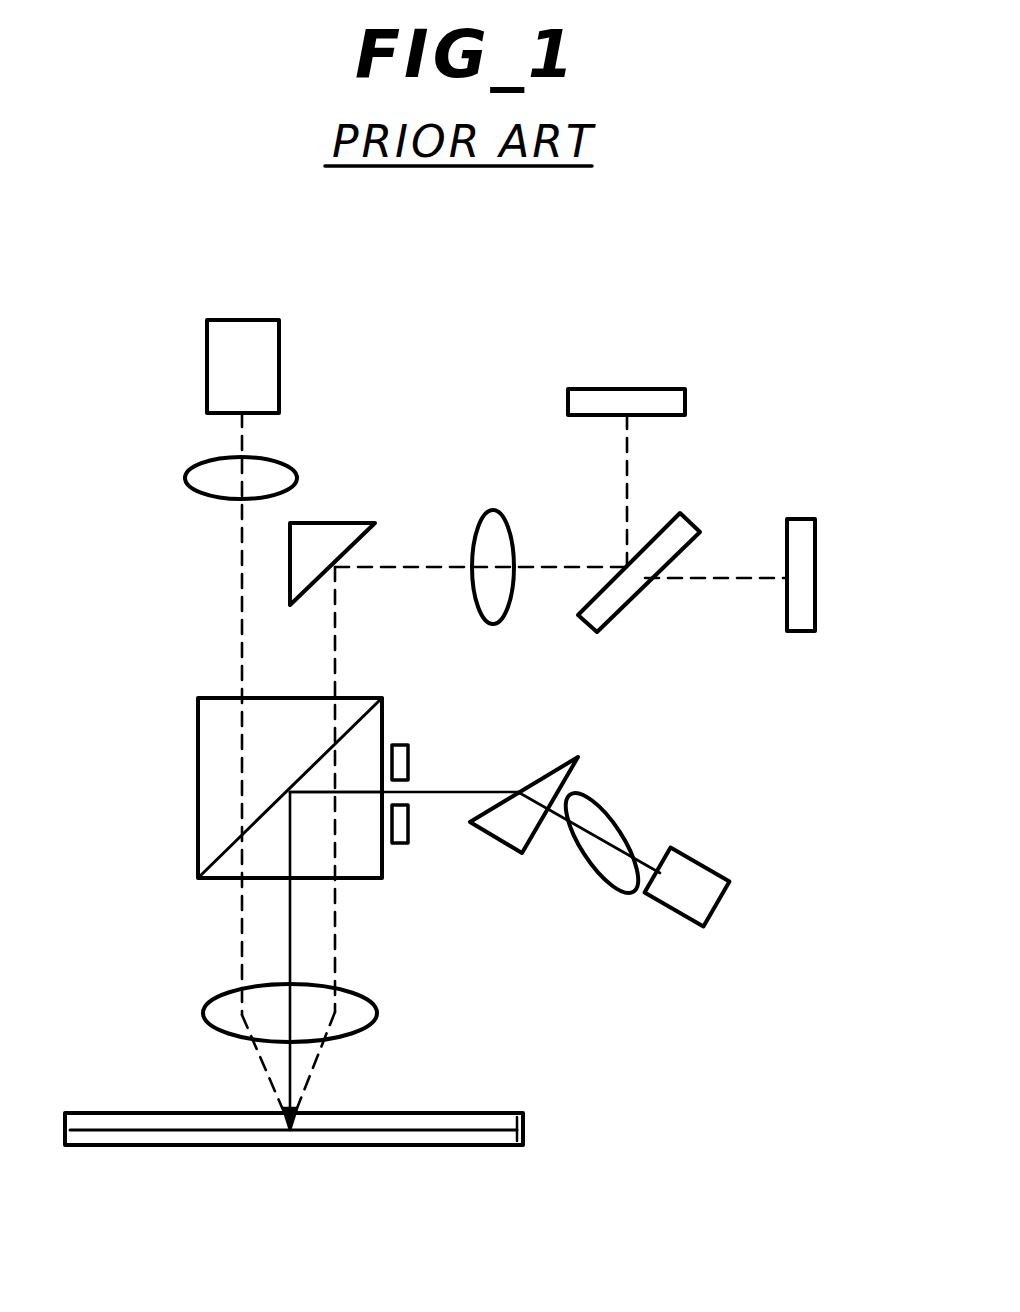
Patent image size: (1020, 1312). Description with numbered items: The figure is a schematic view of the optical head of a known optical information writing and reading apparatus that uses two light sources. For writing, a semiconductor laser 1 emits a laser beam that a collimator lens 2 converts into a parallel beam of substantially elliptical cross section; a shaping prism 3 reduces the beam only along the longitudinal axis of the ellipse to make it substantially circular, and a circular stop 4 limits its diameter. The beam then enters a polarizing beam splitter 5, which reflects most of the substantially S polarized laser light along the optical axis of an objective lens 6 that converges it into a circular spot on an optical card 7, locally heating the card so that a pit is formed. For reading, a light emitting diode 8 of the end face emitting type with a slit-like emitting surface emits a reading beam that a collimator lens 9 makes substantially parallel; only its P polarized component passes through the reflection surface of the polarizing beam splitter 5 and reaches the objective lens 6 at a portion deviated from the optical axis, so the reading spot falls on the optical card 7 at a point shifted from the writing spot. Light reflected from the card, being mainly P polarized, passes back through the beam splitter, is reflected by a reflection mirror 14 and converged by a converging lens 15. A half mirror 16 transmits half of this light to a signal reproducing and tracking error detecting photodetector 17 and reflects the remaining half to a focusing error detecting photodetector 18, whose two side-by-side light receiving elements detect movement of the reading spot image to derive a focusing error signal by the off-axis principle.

The semiconductor laser 1 is at (705, 855).
The collimator lens 2 is at (633, 797).
The shaping prism 3 is at (566, 762).
The circular stop 4 is at (410, 755).
The polarizing beam splitter 5 is at (198, 747).
The objective lens 6 is at (206, 1010).
The optical card 7 is at (100, 1113).
The light emitting diode 8 is at (207, 320).
The collimator lens 9 is at (186, 475).
The reflection mirror 14 is at (349, 522).
The converging lens 15 is at (493, 510).
The half mirror 16 is at (692, 523).
The signal reproducing and tracking error detecting photodetector 17 is at (815, 525).
The focusing error detecting photodetector 18 is at (666, 389).